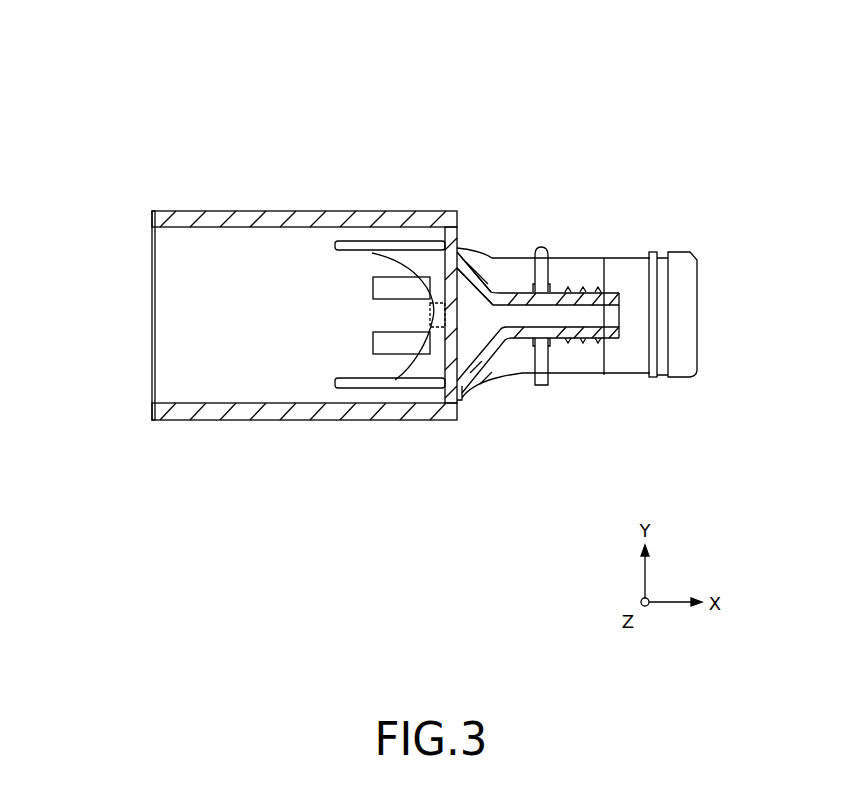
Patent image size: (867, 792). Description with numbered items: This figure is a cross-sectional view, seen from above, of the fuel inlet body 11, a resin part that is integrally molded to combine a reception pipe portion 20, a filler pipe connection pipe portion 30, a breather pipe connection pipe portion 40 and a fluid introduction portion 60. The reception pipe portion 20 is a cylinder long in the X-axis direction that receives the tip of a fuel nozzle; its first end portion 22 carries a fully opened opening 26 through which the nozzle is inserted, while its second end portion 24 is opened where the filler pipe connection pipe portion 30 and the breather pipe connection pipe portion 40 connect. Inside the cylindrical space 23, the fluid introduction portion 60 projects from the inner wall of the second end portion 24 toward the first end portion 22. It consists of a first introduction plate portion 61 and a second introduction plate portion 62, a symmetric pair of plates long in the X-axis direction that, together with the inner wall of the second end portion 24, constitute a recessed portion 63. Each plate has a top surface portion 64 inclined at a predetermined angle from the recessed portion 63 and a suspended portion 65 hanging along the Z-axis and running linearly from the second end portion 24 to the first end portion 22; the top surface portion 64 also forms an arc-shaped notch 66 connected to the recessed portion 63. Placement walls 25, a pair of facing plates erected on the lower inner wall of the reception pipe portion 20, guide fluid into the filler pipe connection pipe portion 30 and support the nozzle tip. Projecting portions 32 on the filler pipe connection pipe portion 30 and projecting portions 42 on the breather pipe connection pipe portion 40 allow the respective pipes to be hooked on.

The fuel inlet body 11 is at (625, 298).
The reception pipe portion 20 is at (264, 438).
The first end portion 22 is at (153, 347).
The cylindrical space 23 is at (295, 332).
The second end portion 24 is at (453, 380).
The placement walls 25 is at (392, 365).
The opening 26 is at (148, 228).
The filler pipe connection pipe portion 30 is at (697, 258).
The projecting portions 32 is at (670, 256).
The breather pipe connection pipe portion 40 is at (516, 336).
The projecting portions 42 is at (607, 340).
The fluid introduction portion 60 is at (331, 262).
The first introduction plate portion 61 is at (337, 245).
The second introduction plate portion 62 is at (338, 377).
The recessed portion 63 is at (481, 246).
The top surface portion 64 is at (400, 332).
The suspended portion 65 is at (357, 250).
The arc-shaped notch 66 is at (482, 272).